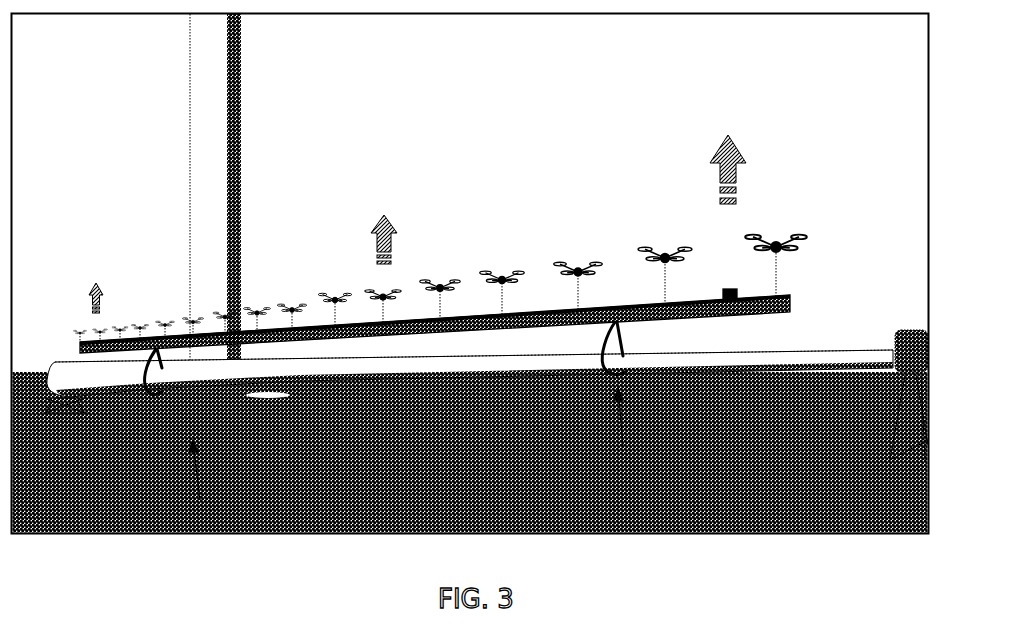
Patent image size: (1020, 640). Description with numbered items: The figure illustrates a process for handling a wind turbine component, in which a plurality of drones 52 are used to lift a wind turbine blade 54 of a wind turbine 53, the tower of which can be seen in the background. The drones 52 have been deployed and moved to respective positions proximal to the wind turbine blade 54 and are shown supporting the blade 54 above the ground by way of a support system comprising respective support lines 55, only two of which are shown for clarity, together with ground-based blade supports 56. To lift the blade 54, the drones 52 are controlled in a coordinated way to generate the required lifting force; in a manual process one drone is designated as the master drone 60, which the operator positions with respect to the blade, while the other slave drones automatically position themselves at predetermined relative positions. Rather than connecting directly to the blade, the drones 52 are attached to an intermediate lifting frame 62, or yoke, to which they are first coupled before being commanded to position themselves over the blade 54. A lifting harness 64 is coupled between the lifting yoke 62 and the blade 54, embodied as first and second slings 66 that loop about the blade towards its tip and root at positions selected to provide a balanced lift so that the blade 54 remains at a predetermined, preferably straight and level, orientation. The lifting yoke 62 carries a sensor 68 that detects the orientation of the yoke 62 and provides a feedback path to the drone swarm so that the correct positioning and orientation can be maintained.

The drones 52 is at (484, 262).
The wind turbine 53 is at (204, 171).
The wind turbine blade 54 is at (482, 368).
The support lines 55 is at (505, 298).
The ground-based blade supports 56 is at (68, 410).
The master drone 60 is at (790, 248).
The lifting frame 62 is at (795, 304).
The lifting harness 64 is at (413, 455).
The slings 66 is at (147, 364).
The sensor 68 is at (729, 288).